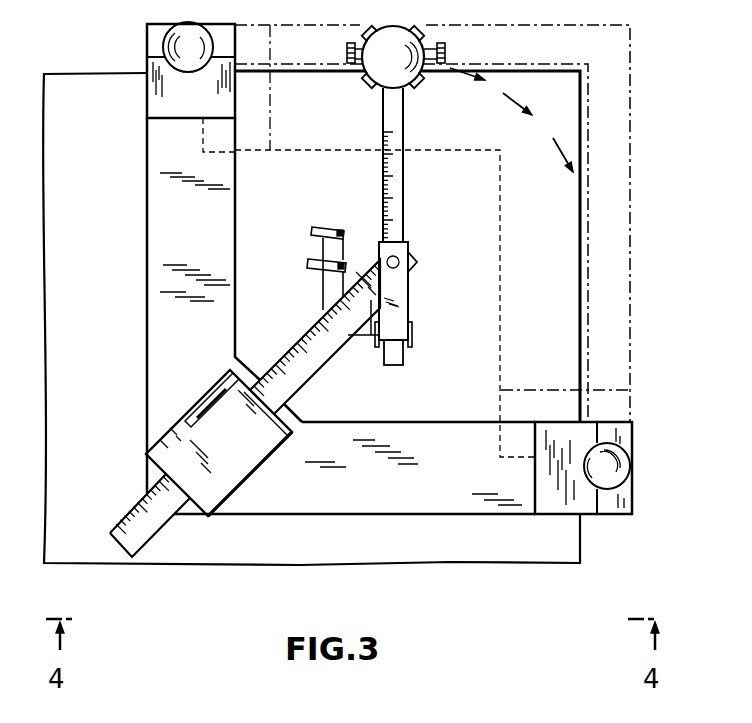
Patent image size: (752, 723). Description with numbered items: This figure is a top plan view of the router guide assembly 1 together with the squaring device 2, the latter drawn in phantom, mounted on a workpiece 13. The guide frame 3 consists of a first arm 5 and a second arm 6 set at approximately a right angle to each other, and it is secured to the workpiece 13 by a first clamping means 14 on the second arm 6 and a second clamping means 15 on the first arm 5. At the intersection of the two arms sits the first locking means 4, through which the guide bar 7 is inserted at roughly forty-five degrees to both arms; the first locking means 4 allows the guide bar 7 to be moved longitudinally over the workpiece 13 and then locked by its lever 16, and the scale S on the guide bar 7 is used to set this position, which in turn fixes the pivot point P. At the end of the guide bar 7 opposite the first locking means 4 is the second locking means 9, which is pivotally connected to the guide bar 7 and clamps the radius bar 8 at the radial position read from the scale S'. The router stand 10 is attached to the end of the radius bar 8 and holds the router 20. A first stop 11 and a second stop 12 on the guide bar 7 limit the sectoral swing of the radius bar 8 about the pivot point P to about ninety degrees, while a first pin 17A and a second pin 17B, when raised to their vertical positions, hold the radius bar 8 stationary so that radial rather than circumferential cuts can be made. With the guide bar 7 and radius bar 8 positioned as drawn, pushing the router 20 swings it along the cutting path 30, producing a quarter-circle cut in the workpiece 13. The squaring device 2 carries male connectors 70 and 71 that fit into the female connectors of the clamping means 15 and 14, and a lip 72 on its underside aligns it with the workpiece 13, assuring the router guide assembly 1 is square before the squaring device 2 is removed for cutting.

The router guide assembly 1 is at (135, 430).
The squaring device 2 is at (632, 280).
The guide frame 3 is at (147, 487).
The first locking means 4 is at (219, 443).
The first arm 5 is at (147, 243).
The second arm 6 is at (362, 516).
The guide bar 7 is at (238, 408).
The radius bar 8 is at (412, 165).
The second locking means 9 is at (414, 302).
The router stand 10 is at (380, 57).
The first stop 11 is at (301, 256).
The second stop 12 is at (413, 338).
The workpiece 13 is at (92, 149).
The first clamping means 14 is at (607, 514).
The second clamping means 15 is at (147, 47).
The lever 16 is at (197, 400).
The first pin 17A is at (301, 255).
The second pin 17B is at (370, 340).
The router 20 is at (406, 67).
The cutting path 30 is at (523, 108).
The male connector 70 is at (203, 135).
The male connector 71 is at (523, 462).
The lip 72 is at (590, 360).
The scale S is at (317, 339).
The scale S' is at (412, 183).
The pivot point P is at (420, 253).